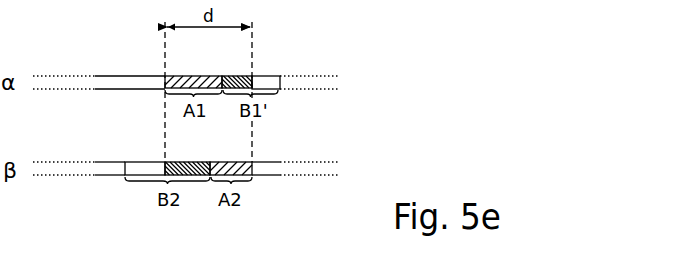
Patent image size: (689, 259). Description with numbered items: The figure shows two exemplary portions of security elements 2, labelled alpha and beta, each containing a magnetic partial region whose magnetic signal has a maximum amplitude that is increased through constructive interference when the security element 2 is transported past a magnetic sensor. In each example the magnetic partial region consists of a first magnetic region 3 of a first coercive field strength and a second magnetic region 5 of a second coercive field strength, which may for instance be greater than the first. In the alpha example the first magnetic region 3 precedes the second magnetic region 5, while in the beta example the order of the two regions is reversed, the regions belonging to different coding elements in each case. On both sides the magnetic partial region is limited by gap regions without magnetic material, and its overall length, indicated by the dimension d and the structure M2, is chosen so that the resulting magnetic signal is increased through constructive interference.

The security element 2 is at (197, 127).
The first magnetic region 3 is at (185, 77).
The second magnetic region 5 is at (228, 77).
The mask / structure M2 is at (257, 66).